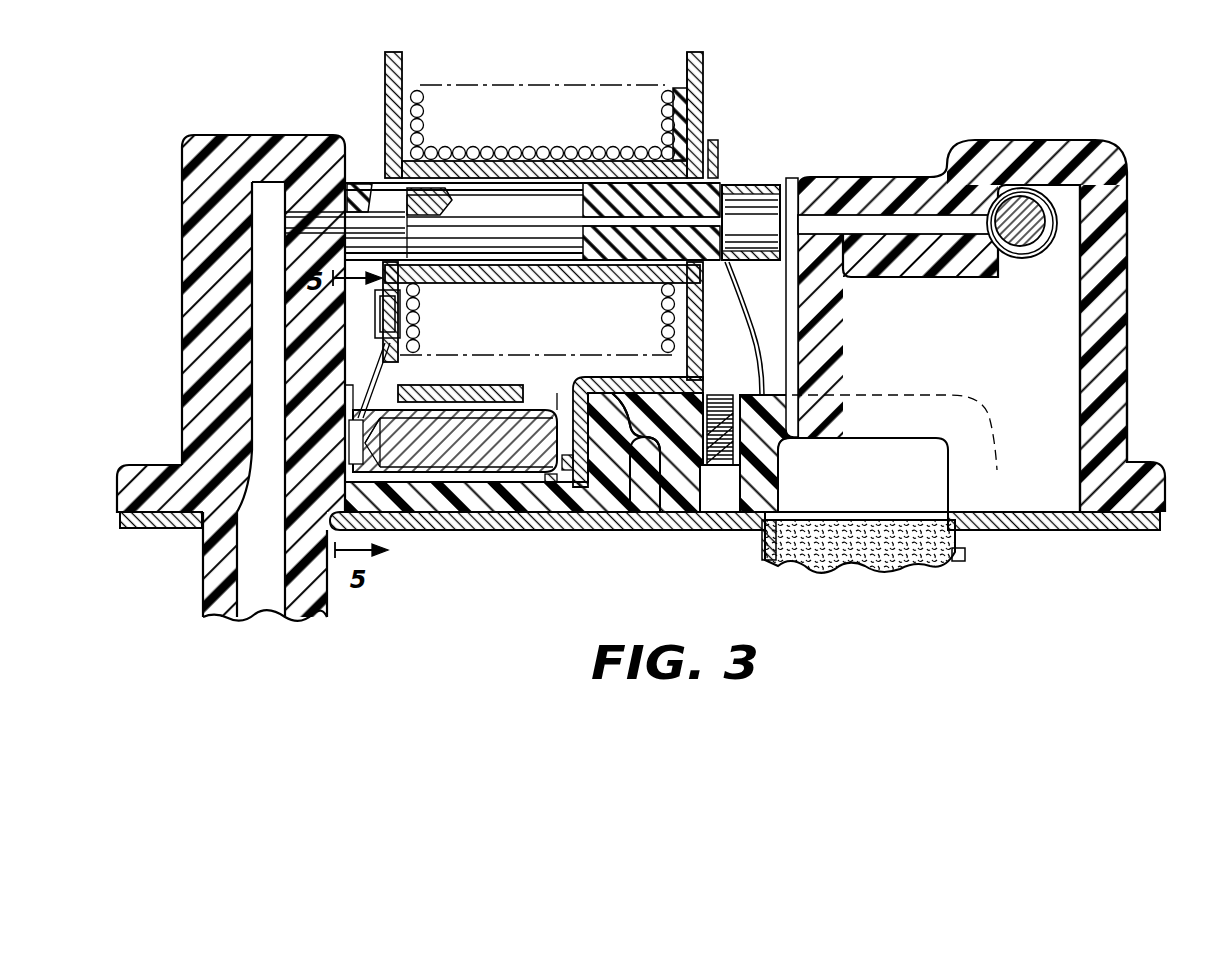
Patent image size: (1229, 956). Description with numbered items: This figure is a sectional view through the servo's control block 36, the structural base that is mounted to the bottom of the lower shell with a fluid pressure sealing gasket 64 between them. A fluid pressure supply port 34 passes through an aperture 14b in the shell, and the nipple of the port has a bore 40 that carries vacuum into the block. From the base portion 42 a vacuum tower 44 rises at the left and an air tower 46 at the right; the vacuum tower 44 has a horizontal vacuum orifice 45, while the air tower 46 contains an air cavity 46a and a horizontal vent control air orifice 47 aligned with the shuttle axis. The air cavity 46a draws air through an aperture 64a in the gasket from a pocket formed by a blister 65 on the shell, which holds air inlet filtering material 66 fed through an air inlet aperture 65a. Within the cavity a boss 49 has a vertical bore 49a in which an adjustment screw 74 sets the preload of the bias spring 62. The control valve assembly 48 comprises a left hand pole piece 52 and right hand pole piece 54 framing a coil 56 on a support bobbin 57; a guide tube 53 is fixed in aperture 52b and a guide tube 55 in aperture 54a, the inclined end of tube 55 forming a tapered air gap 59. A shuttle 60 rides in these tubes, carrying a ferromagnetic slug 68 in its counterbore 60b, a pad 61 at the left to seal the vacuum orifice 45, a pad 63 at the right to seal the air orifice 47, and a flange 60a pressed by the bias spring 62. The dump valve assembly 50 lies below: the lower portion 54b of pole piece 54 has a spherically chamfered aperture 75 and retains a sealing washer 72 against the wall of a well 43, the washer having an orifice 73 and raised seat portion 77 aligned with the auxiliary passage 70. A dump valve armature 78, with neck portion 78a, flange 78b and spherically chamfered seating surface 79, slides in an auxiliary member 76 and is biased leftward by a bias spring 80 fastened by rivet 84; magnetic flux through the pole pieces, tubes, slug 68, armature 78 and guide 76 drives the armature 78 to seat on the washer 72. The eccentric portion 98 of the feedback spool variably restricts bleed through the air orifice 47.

The aperture 14b is at (205, 522).
The fluid pressure supply port 34 is at (195, 597).
The control block 36 is at (180, 301).
The bore 40 is at (280, 617).
The base portion 42 is at (135, 465).
The well 43 is at (380, 487).
The vacuum tower 44 is at (220, 135).
The vacuum orifice 45 is at (292, 215).
The air tower 46 is at (1037, 140).
The air cavity 46a is at (1060, 355).
The vent control air orifice 47 is at (875, 220).
The control valve assembly 48 is at (775, 115).
The boss 49 is at (780, 488).
The vertical bore 49a is at (780, 462).
The dump valve assembly 50 is at (512, 532).
The left hand pole piece 52 is at (393, 52).
The aperture 52b is at (388, 226).
The guide tube 53 is at (483, 283).
The right hand pole piece 54 is at (695, 52).
The aperture 54a is at (705, 315).
The lower portion of pole piece 54b is at (557, 380).
The guide tube 55 is at (640, 175).
The coil 56 is at (670, 92).
The support bobbin 57 is at (680, 90).
The tapered air gap 59 is at (595, 175).
The shuttle 60 is at (762, 185).
The flange 60a is at (725, 140).
The counterbore 60b is at (503, 195).
The pad 61 is at (352, 183).
The bias spring 62 is at (738, 295).
The pad 63 is at (798, 180).
The fluid pressure sealing gasket 64 is at (1165, 526).
The aperture 64a is at (928, 520).
The blister 65 is at (762, 545).
The air inlet aperture 65a is at (958, 562).
The air inlet filtering material 66 is at (870, 568).
The slug 68 is at (430, 190).
The auxiliary passage 70 is at (645, 474).
The sealing washer 72 is at (590, 512).
The orifice 73 is at (616, 432).
The adjustment screw 74 is at (720, 453).
The spherically chamfered aperture 75 is at (555, 400).
The auxiliary member 76 is at (420, 512).
The raised seat portion 77 is at (575, 470).
The dump valve armature 78 is at (445, 410).
The neck portion 78a is at (355, 450).
The flange 78b is at (345, 390).
The spherically chamfered seating surface 79 is at (550, 515).
The bias spring 80 is at (385, 395).
The rivet 84 is at (400, 315).
The eccentric portion 98 is at (1042, 243).